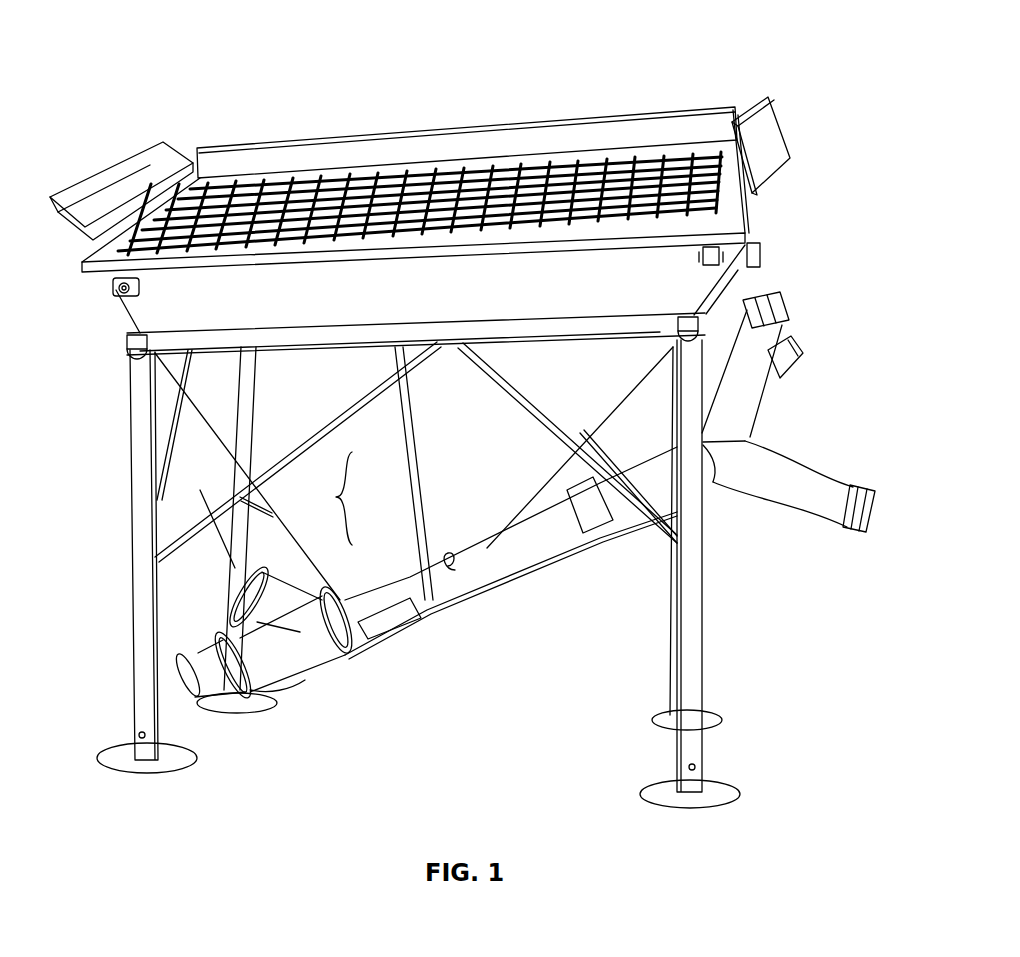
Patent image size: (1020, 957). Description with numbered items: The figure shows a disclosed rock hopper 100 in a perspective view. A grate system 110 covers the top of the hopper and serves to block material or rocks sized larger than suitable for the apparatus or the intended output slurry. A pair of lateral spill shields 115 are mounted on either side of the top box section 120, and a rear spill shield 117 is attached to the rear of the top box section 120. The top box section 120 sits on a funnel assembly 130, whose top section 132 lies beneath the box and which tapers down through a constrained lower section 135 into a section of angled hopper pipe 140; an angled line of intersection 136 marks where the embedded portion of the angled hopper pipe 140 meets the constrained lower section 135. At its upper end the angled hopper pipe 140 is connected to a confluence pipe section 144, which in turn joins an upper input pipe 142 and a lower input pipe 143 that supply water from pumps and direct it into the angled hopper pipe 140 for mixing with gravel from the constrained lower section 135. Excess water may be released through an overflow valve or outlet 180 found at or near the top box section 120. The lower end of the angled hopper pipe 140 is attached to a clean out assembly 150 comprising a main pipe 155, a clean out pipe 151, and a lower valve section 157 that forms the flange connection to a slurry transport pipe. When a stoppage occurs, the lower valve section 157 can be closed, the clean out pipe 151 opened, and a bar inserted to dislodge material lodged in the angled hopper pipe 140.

The rock hopper 100 is at (146, 46).
The rear spill shield 117 is at (455, 132).
The lateral spill shields 115 is at (107, 170).
The grate system 110 is at (733, 196).
The top box section 120 is at (356, 307).
The funnel assembly 130 is at (491, 452).
The top section of funnel assembly 132 is at (195, 377).
The constrained lower section of funnel assembly 135 is at (336, 497).
The angled line of intersection 136 is at (452, 568).
The angled hopper pipe 140 is at (519, 550).
The upper input pipe 142 is at (773, 298).
The lower input pipe 143 is at (857, 527).
The confluence pipe section 144 is at (655, 482).
The overflow valve or outlet 180 is at (790, 362).
The clean out assembly 150 is at (300, 682).
The clean out pipe 151 is at (292, 614).
The main pipe 155 is at (286, 657).
The lower valve section 157 is at (228, 632).